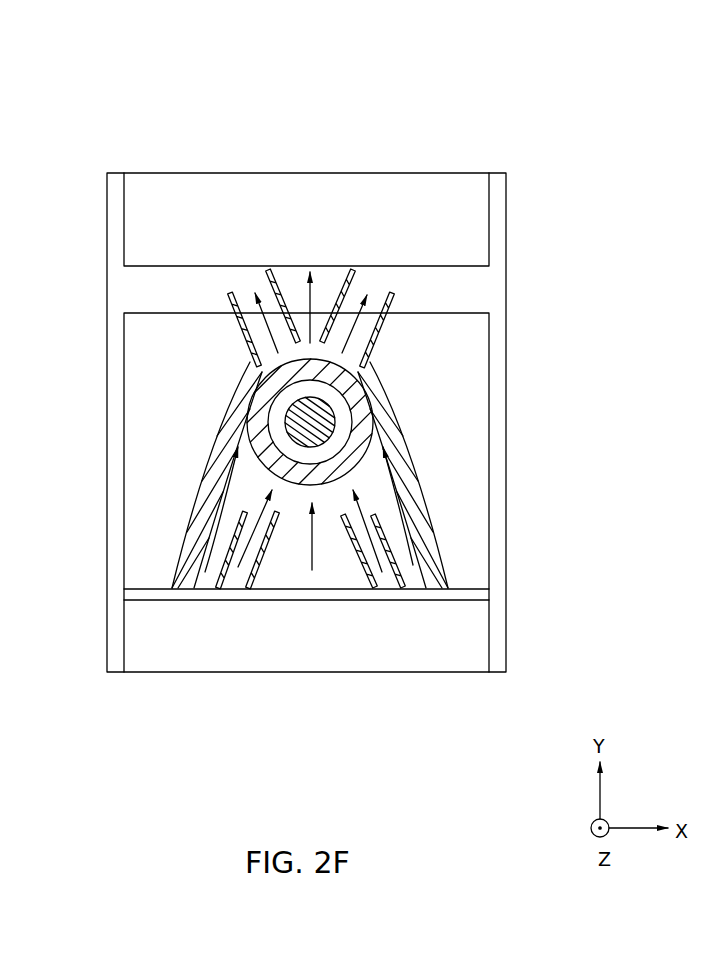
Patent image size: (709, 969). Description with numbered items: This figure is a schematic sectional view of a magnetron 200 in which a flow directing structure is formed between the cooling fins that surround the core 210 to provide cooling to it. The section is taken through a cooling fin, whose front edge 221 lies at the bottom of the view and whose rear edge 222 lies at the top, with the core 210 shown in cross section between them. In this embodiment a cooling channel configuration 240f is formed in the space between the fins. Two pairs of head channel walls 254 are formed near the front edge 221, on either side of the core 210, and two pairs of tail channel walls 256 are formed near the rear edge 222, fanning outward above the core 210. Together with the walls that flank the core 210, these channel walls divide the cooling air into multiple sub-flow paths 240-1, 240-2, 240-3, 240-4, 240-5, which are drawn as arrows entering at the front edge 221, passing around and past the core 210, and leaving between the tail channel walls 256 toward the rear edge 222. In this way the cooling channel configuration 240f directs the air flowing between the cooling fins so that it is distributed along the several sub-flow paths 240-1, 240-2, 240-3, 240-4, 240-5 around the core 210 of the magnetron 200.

The magnetron 200 is at (487, 137).
The rear edge 222 is at (433, 205).
The front edge 221 is at (465, 645).
The core 210 is at (358, 472).
The tail channel walls 256 is at (232, 294).
The head channel walls 254 is at (222, 565).
The sub-flow path 240-1 is at (188, 607).
The sub-flow path 240-2 is at (420, 577).
The sub-flow path 240-3 is at (311, 578).
The sub-flow path 240-4 is at (390, 582).
The sub-flow path 240-5 is at (232, 588).
The cooling channel configuration 240f is at (282, 583).